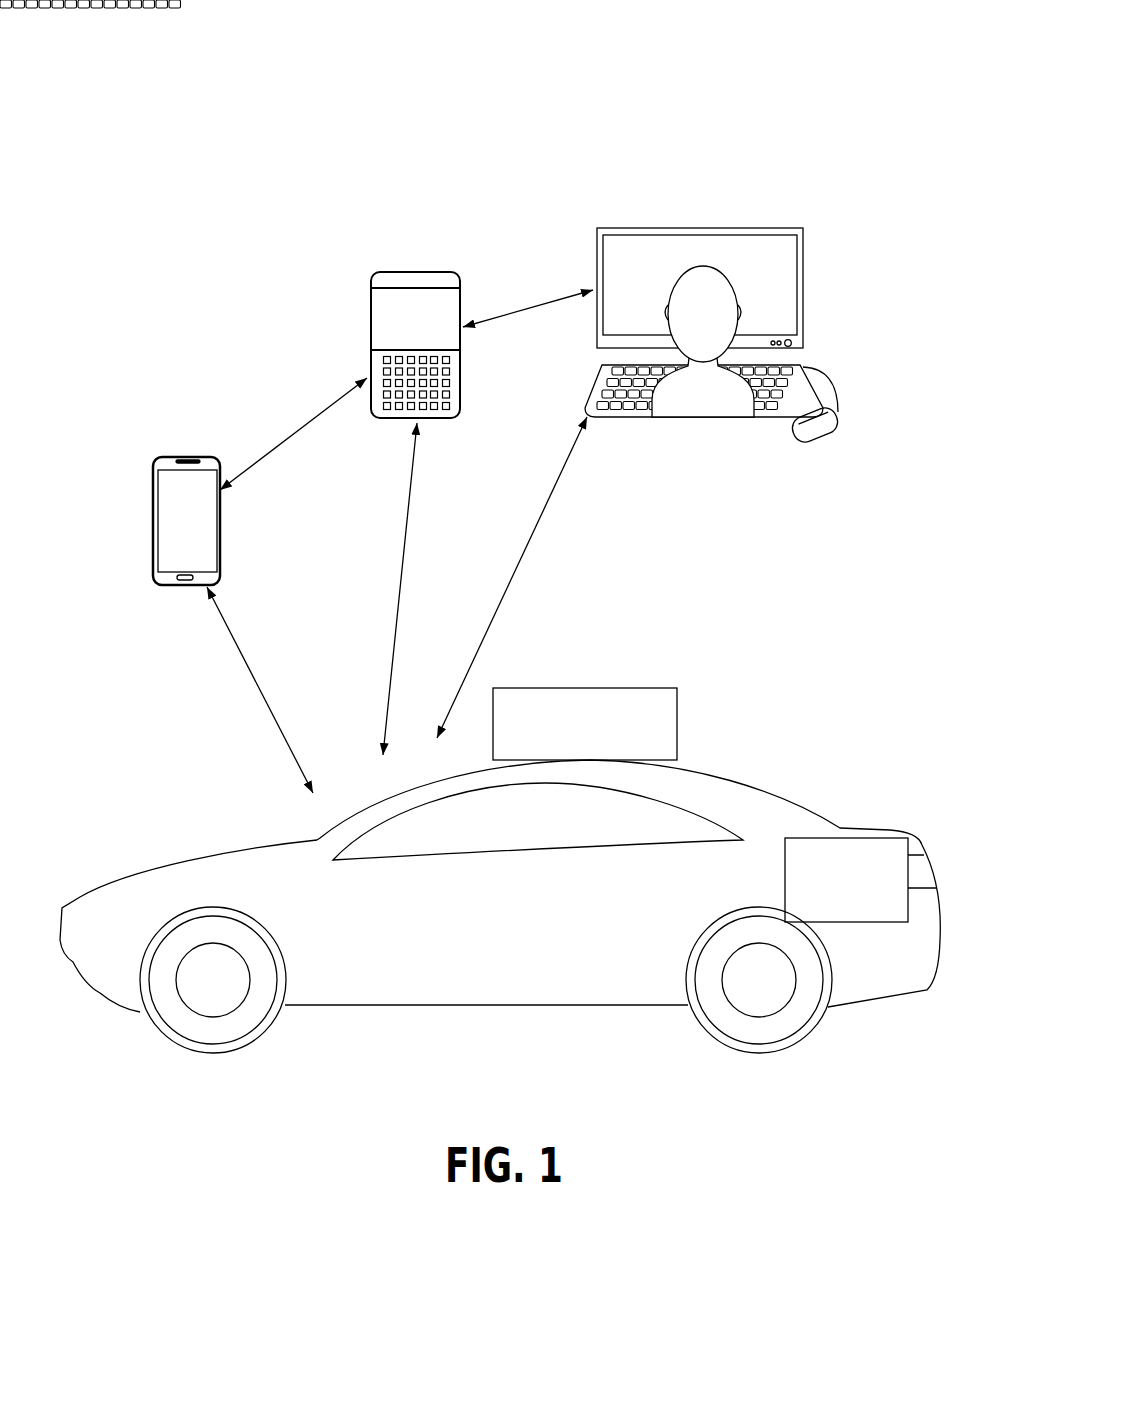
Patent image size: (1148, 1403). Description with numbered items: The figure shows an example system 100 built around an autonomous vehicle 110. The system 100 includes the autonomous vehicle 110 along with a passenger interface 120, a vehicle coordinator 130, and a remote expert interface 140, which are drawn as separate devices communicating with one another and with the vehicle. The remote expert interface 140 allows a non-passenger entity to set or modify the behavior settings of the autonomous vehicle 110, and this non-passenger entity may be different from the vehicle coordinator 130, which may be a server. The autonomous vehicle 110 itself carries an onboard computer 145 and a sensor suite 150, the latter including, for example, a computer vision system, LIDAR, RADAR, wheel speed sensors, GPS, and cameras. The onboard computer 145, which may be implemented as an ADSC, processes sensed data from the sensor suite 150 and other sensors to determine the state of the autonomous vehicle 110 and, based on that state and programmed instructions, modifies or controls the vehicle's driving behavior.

The system 100 is at (841, 135).
The autonomous vehicle 110 is at (895, 970).
The passenger interface 120 is at (173, 457).
The vehicle coordinator 130 is at (398, 272).
The remote expert interface 140 is at (628, 228).
The onboard computer 145 is at (864, 916).
The sensor suite 150 is at (602, 750).